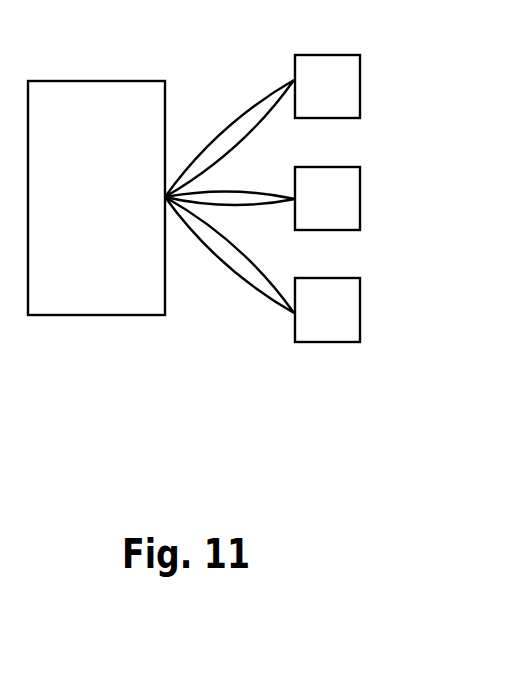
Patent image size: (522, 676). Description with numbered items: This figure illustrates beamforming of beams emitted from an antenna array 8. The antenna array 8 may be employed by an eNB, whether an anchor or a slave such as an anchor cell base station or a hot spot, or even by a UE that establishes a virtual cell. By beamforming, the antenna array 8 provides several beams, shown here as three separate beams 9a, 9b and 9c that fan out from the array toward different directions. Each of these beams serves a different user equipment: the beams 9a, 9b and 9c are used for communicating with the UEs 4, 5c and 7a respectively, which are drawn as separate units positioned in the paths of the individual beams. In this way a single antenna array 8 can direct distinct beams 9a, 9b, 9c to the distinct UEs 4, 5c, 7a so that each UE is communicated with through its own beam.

The antenna array 8 is at (98, 80).
The beam 9a is at (248, 103).
The beam 9b is at (243, 208).
The beam 9c is at (252, 293).
The UE 4 is at (358, 56).
The UE 5c is at (359, 168).
The UE 7a is at (359, 281).